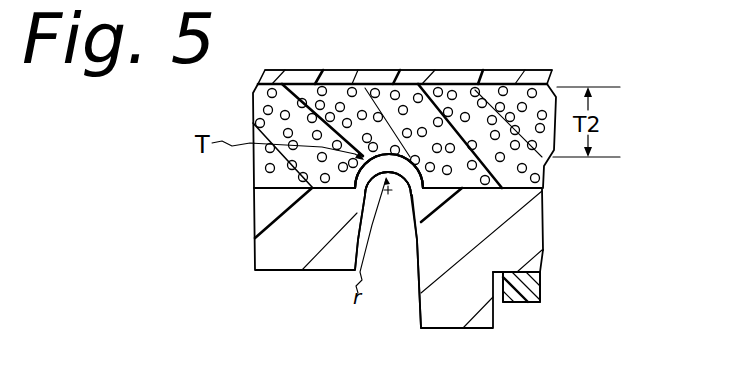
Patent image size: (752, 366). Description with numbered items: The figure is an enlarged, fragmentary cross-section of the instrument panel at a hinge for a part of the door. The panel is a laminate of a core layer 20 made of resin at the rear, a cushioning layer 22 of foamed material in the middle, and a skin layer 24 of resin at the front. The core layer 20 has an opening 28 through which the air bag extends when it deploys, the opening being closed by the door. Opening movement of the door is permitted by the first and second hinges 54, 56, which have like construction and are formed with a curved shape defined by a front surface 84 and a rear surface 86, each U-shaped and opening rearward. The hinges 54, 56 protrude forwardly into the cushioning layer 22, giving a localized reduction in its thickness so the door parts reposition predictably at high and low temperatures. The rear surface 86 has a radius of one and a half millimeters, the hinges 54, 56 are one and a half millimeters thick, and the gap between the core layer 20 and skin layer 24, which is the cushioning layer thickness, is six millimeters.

The core layer 20 is at (540, 282).
The cushioning layer 22 is at (537, 162).
The skin layer 24 is at (510, 70).
The opening 28 is at (497, 300).
The first hinge 54 is at (399, 158).
The second hinge 56 is at (399, 157).
The front surface 84 is at (388, 154).
The rear surface 86 is at (399, 178).